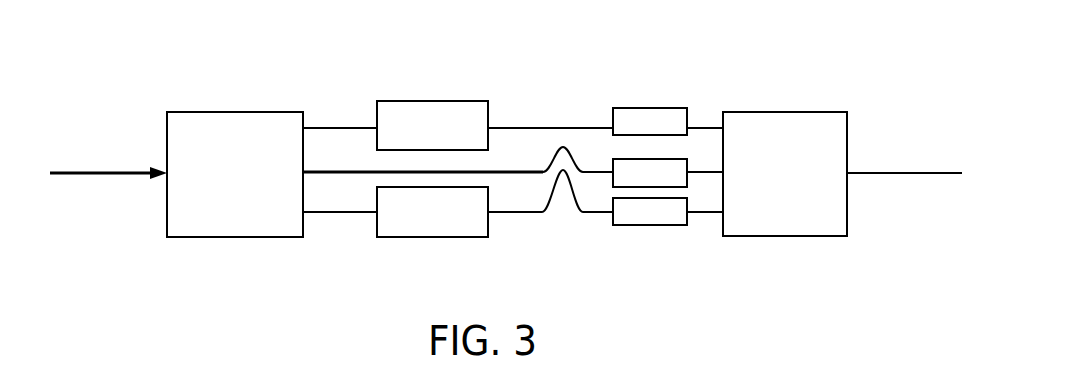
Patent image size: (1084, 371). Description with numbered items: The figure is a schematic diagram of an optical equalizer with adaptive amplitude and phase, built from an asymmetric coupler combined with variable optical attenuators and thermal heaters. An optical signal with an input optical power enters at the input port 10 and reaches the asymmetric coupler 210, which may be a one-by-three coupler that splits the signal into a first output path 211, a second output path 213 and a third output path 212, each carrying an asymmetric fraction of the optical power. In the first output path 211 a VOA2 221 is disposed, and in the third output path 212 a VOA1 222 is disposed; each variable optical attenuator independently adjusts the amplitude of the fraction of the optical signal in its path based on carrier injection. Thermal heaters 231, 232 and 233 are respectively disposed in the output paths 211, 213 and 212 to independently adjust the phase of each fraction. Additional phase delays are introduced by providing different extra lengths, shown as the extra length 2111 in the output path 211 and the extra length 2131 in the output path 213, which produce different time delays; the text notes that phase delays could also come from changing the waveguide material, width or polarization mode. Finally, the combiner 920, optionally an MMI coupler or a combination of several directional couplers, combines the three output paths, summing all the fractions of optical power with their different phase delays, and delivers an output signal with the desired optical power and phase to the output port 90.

The input port 10 is at (87, 175).
The asymmetric coupler 210 is at (223, 112).
The first output path 211 is at (345, 213).
The third output path 212 is at (342, 128).
The second output path 213 is at (423, 182).
The VOA2 221 is at (443, 237).
The VOA1 222 is at (438, 102).
The extra length in output path 211 2111 is at (547, 177).
The extra length in output path 213 2131 is at (543, 167).
The thermal heater 231 is at (648, 224).
The thermal heater 232 is at (667, 159).
The thermal heater 233 is at (645, 108).
The combiner 920 is at (805, 236).
The output port 90 is at (912, 173).